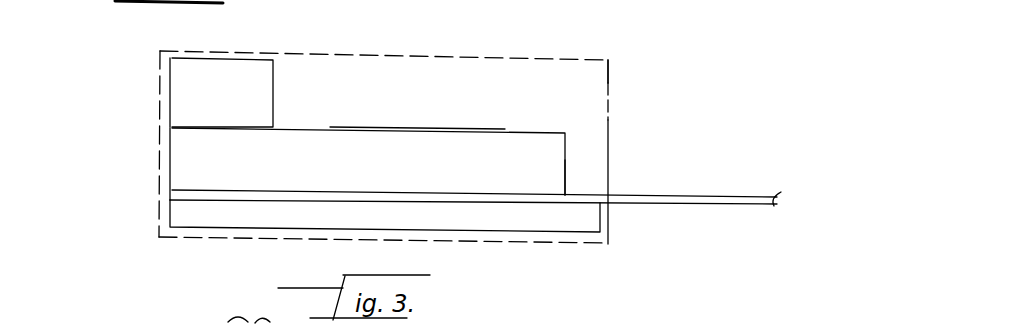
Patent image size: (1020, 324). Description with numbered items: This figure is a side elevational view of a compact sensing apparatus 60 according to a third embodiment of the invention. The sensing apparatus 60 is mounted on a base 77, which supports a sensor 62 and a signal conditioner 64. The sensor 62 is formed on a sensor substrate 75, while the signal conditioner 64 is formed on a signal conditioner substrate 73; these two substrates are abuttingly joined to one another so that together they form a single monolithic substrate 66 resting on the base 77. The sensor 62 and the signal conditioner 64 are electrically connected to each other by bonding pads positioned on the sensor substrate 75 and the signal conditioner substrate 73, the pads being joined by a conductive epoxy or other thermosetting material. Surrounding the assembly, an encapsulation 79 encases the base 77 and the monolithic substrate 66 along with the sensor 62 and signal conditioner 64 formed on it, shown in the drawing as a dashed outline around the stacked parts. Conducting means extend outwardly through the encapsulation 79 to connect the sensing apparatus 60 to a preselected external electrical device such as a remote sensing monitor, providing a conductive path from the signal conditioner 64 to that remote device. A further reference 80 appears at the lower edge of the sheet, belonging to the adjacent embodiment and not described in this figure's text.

The sensing apparatus 60 is at (648, 41).
The sensor 62 is at (162, 94).
The signal conditioner 64 is at (490, 128).
The monolithic substrate 66 is at (183, 164).
The signal conditioner substrate 73 is at (565, 170).
The sensor substrate 75 is at (200, 60).
The base 77 is at (597, 220).
The encapsulation 79 is at (608, 83).
The second assembly 80 is at (683, 323).